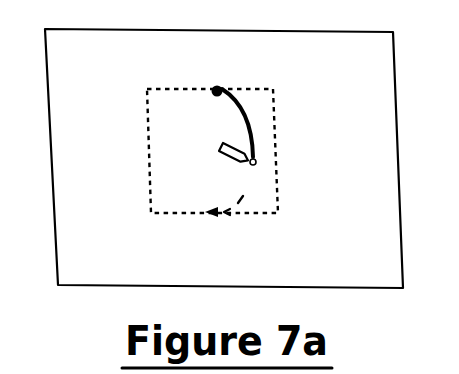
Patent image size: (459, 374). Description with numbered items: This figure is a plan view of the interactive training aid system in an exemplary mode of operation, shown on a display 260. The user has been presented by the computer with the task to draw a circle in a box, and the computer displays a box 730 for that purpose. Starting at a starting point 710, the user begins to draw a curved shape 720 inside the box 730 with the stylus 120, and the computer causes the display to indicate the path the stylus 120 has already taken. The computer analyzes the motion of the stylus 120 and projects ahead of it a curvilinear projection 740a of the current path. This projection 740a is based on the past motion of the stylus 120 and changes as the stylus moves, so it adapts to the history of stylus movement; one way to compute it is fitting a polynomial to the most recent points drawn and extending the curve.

The display screen 260 is at (265, 31).
The starting point 710 is at (222, 77).
The curved shape 720 is at (246, 107).
The box 730 is at (278, 131).
The stylus 120 is at (233, 139).
The curvilinear projection 740a is at (248, 192).